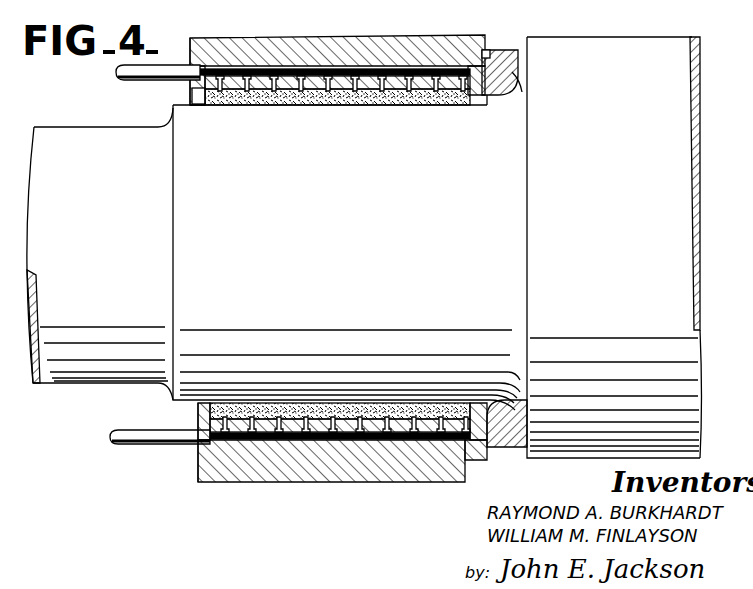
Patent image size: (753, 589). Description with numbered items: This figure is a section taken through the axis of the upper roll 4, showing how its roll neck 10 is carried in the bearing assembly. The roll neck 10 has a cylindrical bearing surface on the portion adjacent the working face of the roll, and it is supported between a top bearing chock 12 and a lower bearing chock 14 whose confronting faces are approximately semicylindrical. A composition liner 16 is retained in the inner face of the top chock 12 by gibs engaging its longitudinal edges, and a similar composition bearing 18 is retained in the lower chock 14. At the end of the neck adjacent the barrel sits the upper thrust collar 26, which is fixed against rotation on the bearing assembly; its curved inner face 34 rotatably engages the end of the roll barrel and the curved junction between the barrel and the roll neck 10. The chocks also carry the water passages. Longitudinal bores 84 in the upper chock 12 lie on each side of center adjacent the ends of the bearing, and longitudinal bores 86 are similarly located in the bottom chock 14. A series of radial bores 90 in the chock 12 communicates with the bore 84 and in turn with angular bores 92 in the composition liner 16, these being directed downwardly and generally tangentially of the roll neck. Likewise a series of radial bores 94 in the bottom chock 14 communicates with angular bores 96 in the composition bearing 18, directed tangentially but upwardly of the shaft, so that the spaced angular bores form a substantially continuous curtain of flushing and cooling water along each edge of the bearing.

The upper roll 4 is at (672, 248).
The roll neck 10 is at (368, 253).
The top bearing chock 12 is at (398, 48).
The lower bearing chock 14 is at (210, 460).
The composition liner 16 is at (250, 104).
The composition bearing 18 is at (205, 412).
The upper thrust collar 26 is at (500, 60).
The curved inner face 34 is at (515, 78).
The longitudinal bores 84 is at (222, 72).
The longitudinal bores 86 is at (262, 440).
The radial bores 90 is at (356, 78).
The angular bores 92 is at (405, 100).
The radial bores 94 is at (320, 428).
The angular bores 96 is at (410, 398).